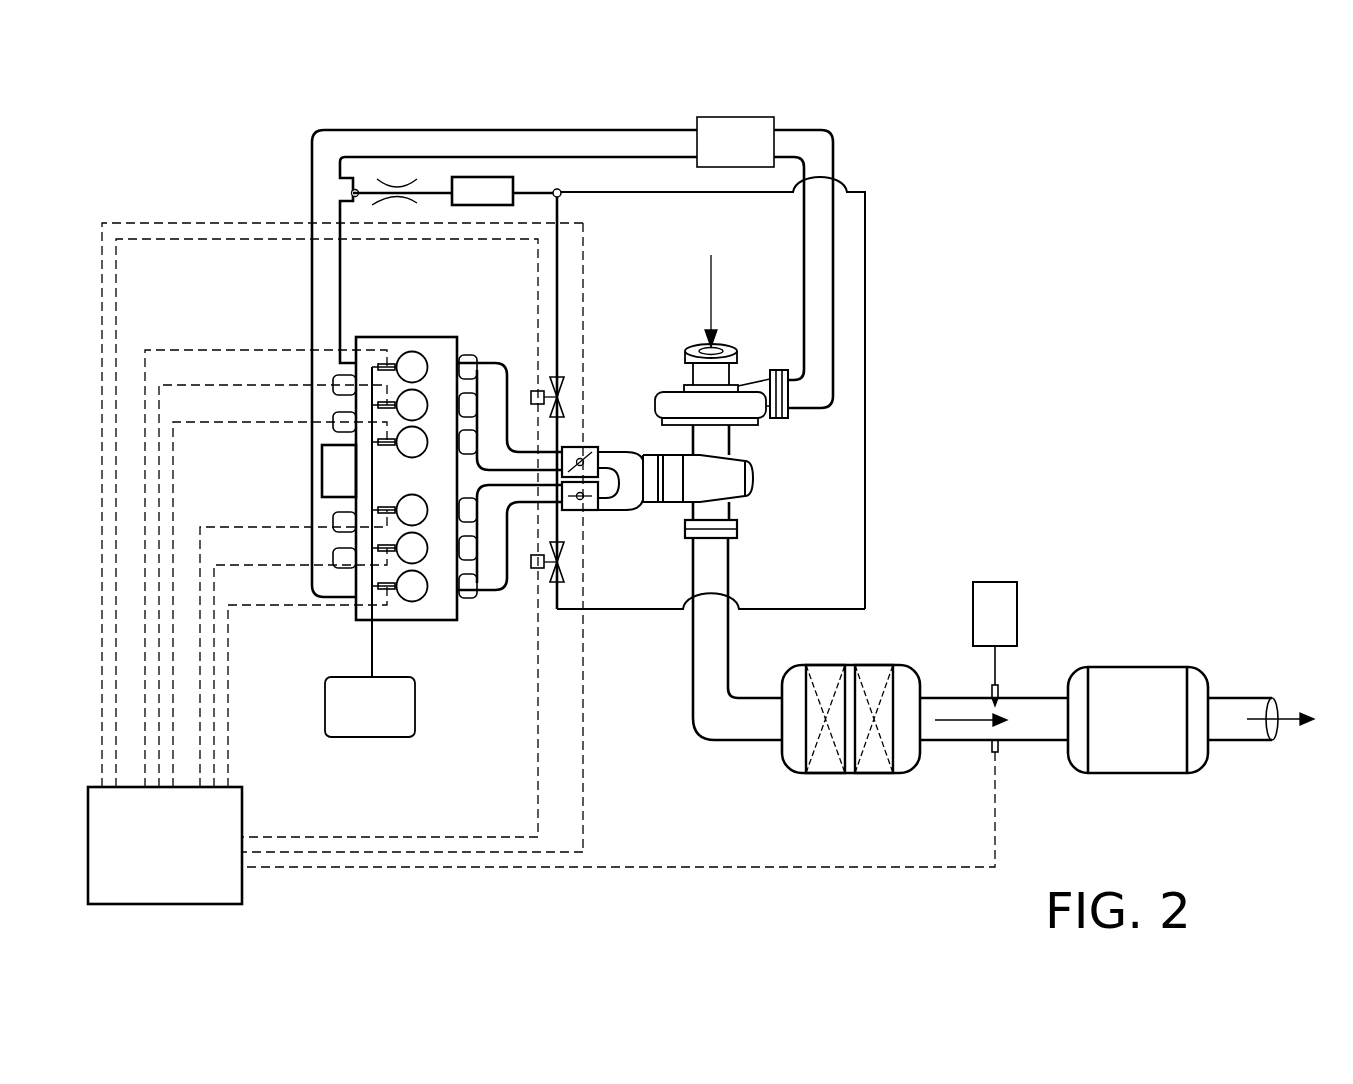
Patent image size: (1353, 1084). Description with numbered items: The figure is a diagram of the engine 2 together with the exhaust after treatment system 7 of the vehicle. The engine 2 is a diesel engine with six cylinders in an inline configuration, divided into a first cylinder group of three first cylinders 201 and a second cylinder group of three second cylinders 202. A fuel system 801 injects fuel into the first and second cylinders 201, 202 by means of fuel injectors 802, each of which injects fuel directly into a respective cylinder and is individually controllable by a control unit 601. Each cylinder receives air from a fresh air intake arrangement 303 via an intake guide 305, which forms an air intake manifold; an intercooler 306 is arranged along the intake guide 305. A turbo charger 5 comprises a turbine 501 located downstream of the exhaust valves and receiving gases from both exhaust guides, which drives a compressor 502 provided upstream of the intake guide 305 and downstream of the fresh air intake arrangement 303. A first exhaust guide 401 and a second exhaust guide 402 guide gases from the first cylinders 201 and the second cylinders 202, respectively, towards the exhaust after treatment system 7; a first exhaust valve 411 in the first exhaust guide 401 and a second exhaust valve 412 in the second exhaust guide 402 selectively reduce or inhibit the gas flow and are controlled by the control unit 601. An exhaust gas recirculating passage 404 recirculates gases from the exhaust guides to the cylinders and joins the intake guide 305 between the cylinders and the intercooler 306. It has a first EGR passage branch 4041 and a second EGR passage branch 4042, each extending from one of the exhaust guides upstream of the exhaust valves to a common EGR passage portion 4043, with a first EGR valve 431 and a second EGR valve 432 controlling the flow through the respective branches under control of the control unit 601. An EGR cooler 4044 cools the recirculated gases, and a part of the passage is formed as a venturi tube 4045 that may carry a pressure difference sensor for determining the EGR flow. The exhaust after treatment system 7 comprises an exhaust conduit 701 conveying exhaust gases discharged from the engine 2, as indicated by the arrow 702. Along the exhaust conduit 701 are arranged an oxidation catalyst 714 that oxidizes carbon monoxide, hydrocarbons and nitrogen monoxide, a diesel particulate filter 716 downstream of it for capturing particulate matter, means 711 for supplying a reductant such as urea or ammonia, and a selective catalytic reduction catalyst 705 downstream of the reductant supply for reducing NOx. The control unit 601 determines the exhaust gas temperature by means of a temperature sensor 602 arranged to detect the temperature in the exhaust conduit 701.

The engine 2 is at (615, 756).
The exhaust after treatment system 7 is at (1125, 525).
The first cylinders 201 is at (432, 508).
The second cylinders 202 is at (432, 520).
The fresh air intake arrangement 303 is at (722, 350).
The intake guide 305 is at (650, 128).
The intercooler 306 is at (757, 117).
The first exhaust guide 401 is at (532, 428).
The second exhaust guide 402 is at (521, 502).
The exhaust gas recirculating passage 404 is at (533, 190).
The first EGR passage branch 4041 is at (540, 305).
The second EGR passage branch 4042 is at (622, 610).
The common EGR passage portion 4043 is at (433, 190).
The EGR cooler 4044 is at (473, 177).
The venturi tube 4045 is at (387, 178).
The first exhaust valve 411 is at (598, 462).
The second exhaust valve 412 is at (598, 502).
The first EGR valve 431 is at (550, 388).
The second EGR valve 432 is at (549, 578).
The turbo charger 5 is at (757, 492).
The turbine 501 is at (757, 465).
The compressor 502 is at (770, 422).
The control unit 601 is at (185, 863).
The temperature sensor 602 is at (1000, 748).
The exhaust conduit 701 is at (945, 698).
The arrow 702 is at (945, 722).
The selective catalytic reduction catalyst 705 is at (1138, 667).
The reductant supply means 711 is at (993, 582).
The oxidation catalyst 714 is at (822, 773).
The diesel particulate filter 716 is at (875, 773).
The fuel system 801 is at (392, 723).
The fuel injectors 802 is at (400, 512).